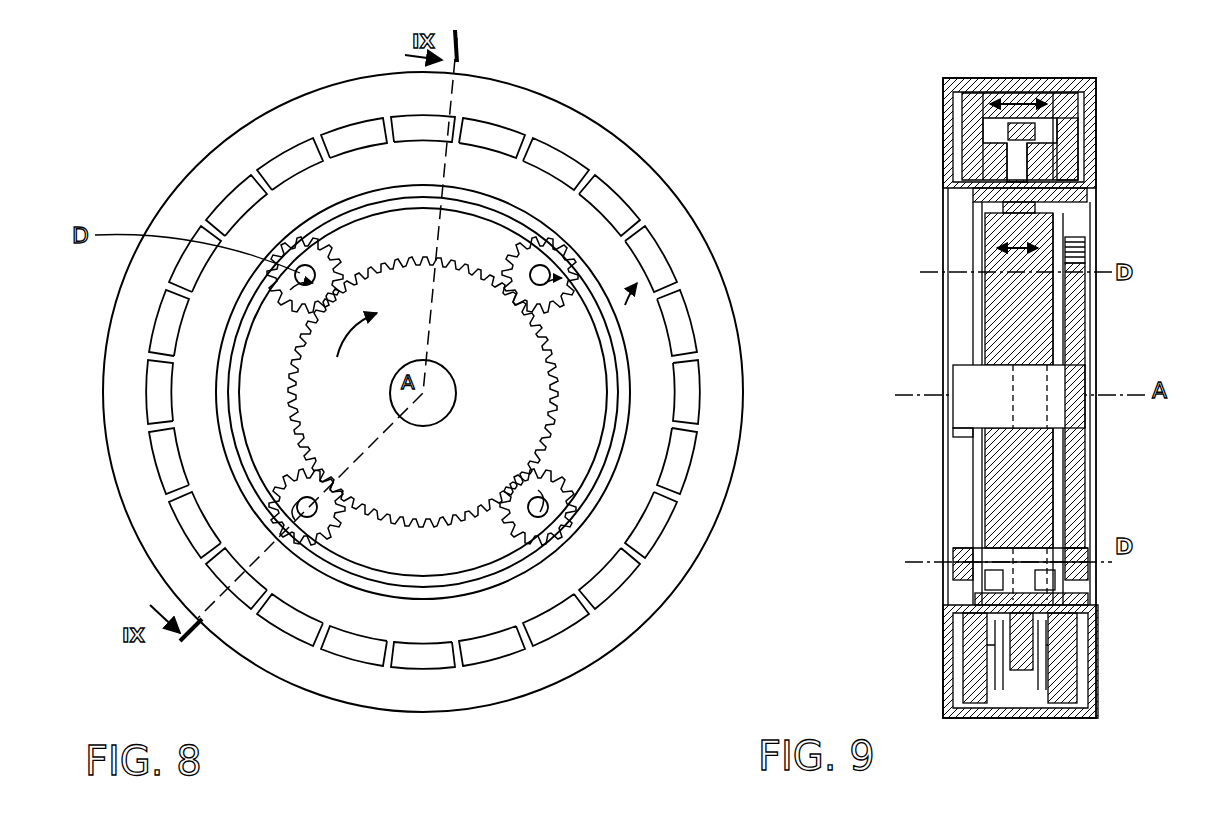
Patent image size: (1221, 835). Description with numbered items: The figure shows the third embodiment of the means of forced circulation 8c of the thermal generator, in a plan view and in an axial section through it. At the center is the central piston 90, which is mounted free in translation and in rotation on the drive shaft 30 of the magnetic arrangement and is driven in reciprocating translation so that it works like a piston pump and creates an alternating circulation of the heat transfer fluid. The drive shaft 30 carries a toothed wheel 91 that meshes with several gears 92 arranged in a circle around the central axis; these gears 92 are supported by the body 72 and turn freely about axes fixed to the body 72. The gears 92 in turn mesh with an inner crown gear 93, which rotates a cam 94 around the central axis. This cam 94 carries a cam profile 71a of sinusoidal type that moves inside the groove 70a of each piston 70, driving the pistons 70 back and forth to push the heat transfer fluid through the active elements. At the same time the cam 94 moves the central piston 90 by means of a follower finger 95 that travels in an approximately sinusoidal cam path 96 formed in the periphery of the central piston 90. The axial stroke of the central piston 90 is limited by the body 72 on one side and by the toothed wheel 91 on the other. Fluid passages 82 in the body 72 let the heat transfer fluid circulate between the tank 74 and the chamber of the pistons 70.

In FIG. 8, the means of forced circulation 8c is at (630, 126).
In FIG. 9, the means of forced circulation 8c is at (962, 313).
In FIG. 8, the drive shaft 30 is at (446, 393).
In FIG. 9, the drive shaft 30 is at (1065, 380).
In FIG. 9, the piston 70 is at (1070, 78).
In FIG. 9, the groove 70a is at (1000, 78).
In FIG. 9, the cam profile 71a is at (1093, 100).
In FIG. 9, the body 72 is at (950, 233).
In FIG. 8, the tank 74 is at (440, 556).
In FIG. 8, the fluid passages 82 is at (643, 247).
In FIG. 9, the fluid passages 82 is at (947, 135).
In FIG. 8, the central piston 90 is at (568, 470).
In FIG. 9, the central piston 90 is at (1062, 300).
In FIG. 8, the toothed wheel 91 is at (310, 383).
In FIG. 9, the toothed wheel 91 is at (1085, 440).
In FIG. 8, the gears 92 is at (277, 260).
In FIG. 9, the gears 92 is at (1085, 535).
In FIG. 8, the inner crown gear 93 is at (330, 217).
In FIG. 9, the inner crown gear 93 is at (1078, 565).
In FIG. 8, the cam 94 is at (476, 208).
In FIG. 9, the cam 94 is at (965, 200).
In FIG. 9, the follower finger 95 is at (1060, 215).
In FIG. 9, the cam path 96 is at (1078, 240).